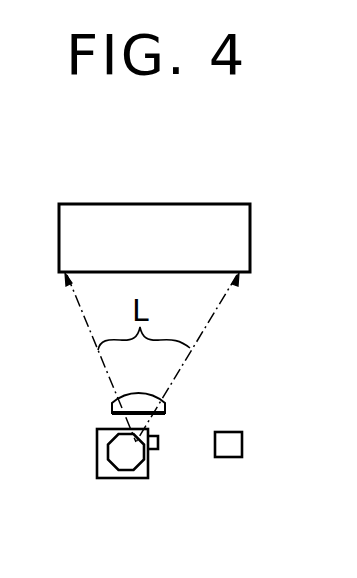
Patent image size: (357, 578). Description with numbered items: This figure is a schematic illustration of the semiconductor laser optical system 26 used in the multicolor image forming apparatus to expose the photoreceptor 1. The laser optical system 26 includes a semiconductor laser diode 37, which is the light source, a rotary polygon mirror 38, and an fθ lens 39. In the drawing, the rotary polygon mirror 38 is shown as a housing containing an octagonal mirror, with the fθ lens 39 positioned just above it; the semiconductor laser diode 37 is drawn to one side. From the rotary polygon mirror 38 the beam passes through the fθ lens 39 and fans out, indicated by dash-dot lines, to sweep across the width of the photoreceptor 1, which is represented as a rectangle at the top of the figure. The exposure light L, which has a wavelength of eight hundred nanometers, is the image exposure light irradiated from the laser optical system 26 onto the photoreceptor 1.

The photoreceptor 1 is at (232, 243).
The semiconductor laser optical system 26 is at (204, 358).
The semiconductor laser diode 37 is at (242, 443).
The rotary polygon mirror 38 is at (120, 479).
The fθ lens 39 is at (165, 410).